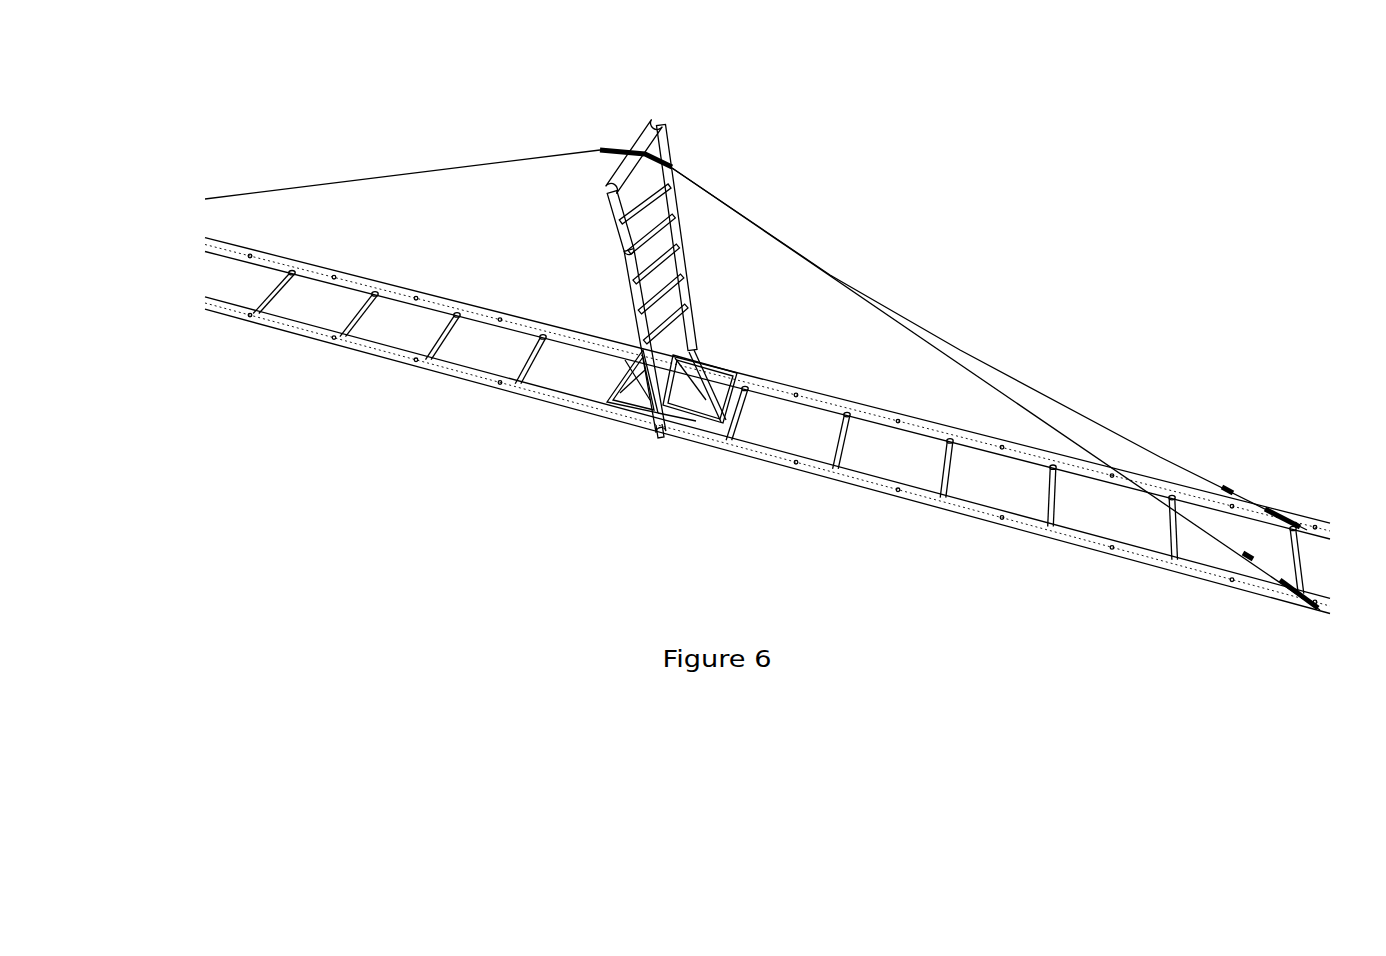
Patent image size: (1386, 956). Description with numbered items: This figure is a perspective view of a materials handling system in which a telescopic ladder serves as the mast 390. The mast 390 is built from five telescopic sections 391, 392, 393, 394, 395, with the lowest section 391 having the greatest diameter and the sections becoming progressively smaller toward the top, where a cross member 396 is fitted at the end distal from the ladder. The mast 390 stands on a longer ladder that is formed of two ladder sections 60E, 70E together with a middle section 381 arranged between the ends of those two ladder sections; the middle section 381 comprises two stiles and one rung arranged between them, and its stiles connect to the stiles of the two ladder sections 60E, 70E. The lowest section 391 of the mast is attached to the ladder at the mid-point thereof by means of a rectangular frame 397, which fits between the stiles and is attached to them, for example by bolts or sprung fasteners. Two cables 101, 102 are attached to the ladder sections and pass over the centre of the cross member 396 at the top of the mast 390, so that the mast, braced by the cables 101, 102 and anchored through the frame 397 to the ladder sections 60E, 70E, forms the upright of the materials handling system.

The ladder section 60E is at (385, 362).
The ladder section 70E is at (858, 490).
The cable 101 is at (975, 358).
The cable 102 is at (975, 373).
The mast 390 is at (682, 252).
The cross member 396 is at (643, 140).
The section 395 is at (620, 217).
The section 394 is at (632, 285).
The section 393 is at (637, 320).
The section 392 is at (693, 318).
The lowest section 391 is at (697, 347).
The rectangular frame 397 is at (742, 378).
The middle section 381 is at (658, 447).